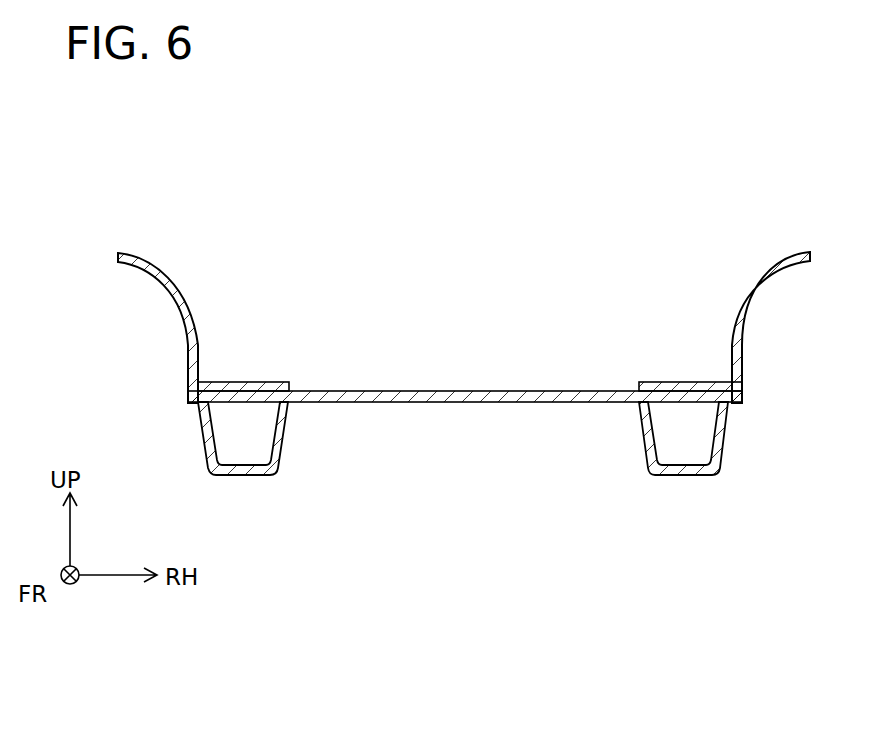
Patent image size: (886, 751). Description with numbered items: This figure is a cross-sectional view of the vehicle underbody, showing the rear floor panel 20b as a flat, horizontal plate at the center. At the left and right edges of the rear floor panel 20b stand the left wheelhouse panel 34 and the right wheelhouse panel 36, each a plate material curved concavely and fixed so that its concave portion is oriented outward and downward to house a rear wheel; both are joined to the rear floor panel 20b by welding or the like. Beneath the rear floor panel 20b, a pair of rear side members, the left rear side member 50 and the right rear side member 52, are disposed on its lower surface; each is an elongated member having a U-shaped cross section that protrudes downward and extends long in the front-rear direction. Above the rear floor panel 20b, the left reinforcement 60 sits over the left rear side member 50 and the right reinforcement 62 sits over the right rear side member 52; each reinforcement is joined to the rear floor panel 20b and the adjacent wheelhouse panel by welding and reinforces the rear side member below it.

The rear floor panel 20b is at (462, 397).
The left wheelhouse panel 34 is at (155, 265).
The right wheelhouse panel 36 is at (770, 263).
The left reinforcement 60 is at (255, 388).
The right reinforcement 62 is at (673, 388).
The left rear side member 50 is at (243, 467).
The right rear side member 52 is at (685, 467).